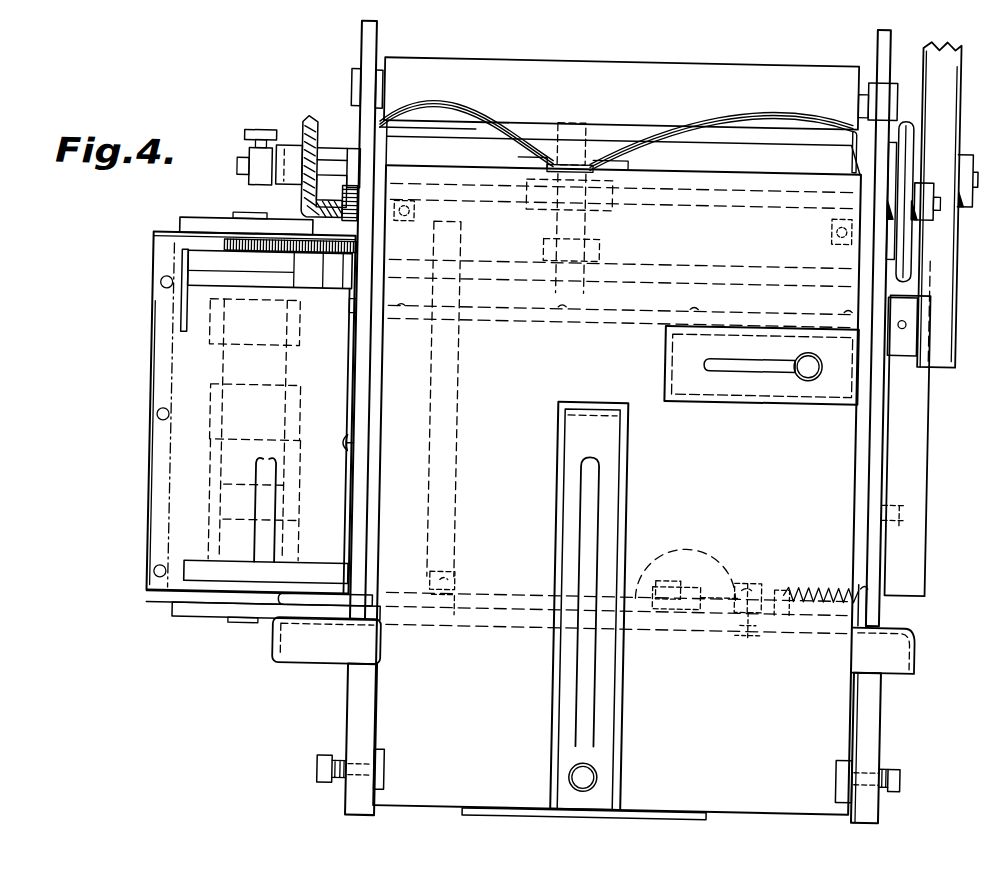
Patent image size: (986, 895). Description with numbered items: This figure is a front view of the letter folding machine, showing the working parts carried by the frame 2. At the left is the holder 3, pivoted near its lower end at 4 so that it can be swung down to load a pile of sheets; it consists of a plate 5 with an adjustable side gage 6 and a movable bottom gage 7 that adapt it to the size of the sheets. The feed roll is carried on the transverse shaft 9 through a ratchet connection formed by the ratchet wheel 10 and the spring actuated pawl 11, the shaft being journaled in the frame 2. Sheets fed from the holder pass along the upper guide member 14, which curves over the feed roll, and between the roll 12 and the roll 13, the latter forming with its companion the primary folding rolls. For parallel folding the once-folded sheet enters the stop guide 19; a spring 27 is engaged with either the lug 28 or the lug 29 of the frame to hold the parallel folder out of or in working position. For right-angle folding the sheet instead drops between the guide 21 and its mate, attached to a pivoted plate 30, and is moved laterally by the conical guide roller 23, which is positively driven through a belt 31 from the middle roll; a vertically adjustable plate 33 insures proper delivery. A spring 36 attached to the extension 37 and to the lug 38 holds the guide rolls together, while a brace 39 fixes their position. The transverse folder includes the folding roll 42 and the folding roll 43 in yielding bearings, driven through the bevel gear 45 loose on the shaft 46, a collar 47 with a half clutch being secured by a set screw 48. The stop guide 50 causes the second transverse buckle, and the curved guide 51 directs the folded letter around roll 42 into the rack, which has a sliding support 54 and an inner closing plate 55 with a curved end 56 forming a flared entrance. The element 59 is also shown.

The frame 2 is at (403, 374).
The holder 3 is at (251, 413).
The pivot support 4 is at (337, 761).
The plate 5 is at (844, 723).
The adjustable side gage 6 is at (845, 372).
The movable bottom gage 7 is at (695, 811).
The transverse shaft 9 is at (940, 161).
The ratchet wheel 10 is at (339, 203).
The spring actuated pawl 11 is at (339, 157).
The roll 12 is at (621, 93).
The roll 13 is at (620, 148).
The upper guide member 14 is at (616, 138).
The stop guide 19 is at (576, 245).
The guide 21 is at (448, 506).
The guide roller 23 is at (692, 558).
The spring 27 is at (923, 484).
The lug 28 is at (888, 146).
The lug 29 is at (899, 529).
The pivoted plate 30 is at (461, 581).
The belt 31 is at (381, 604).
The plate 33 is at (743, 584).
The spring 36 is at (821, 576).
The extension 37 is at (774, 591).
The lug 38 is at (878, 592).
The brace 39 is at (751, 641).
The folding roll 42 is at (316, 268).
The folding roll 43 is at (234, 241).
The bevel gear 45 is at (312, 118).
The shaft 46 is at (236, 178).
The collar 47 is at (252, 160).
The set screw 48 is at (253, 147).
The stop guide 50 is at (158, 326).
The curved guide 51 is at (335, 271).
The support 54 is at (185, 390).
The plate 55 is at (270, 268).
The curved end 56 is at (306, 270).
The bar 59 is at (945, 345).